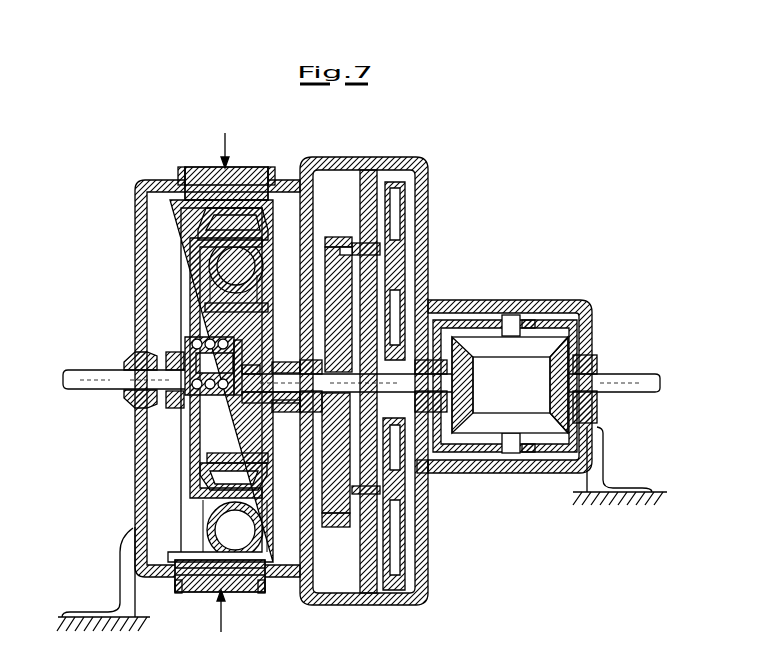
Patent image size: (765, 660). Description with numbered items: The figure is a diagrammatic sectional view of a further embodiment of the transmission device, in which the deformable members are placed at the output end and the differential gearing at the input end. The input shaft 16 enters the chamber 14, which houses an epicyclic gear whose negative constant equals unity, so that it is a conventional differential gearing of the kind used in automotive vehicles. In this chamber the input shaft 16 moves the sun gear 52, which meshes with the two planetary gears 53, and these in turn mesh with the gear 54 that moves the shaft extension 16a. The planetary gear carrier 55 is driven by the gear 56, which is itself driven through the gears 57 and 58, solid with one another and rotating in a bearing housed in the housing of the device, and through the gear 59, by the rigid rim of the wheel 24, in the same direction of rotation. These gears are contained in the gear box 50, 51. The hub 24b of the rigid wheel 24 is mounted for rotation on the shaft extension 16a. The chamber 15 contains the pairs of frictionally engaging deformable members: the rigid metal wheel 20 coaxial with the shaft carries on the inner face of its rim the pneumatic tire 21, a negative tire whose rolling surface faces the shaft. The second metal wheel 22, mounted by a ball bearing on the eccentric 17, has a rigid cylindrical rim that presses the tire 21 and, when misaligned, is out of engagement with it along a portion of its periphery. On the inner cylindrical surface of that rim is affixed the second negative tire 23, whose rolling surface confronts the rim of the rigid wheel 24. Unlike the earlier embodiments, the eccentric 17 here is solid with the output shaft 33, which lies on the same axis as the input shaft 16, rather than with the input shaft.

The chamber 14 is at (555, 318).
The chamber 15 is at (150, 500).
The input shaft 16 is at (619, 382).
The shaft extension 16a is at (253, 386).
The eccentric 17 is at (215, 373).
The wheel 20 is at (172, 232).
The pneumatic tire 21 is at (262, 512).
The second metal wheel 22 is at (198, 277).
The second negative tire 23 is at (261, 484).
The rigid wheel 24 is at (267, 322).
The hub 24b is at (285, 399).
The output shaft 33 is at (102, 378).
The gear box 50 is at (338, 584).
The gear box 51 is at (376, 594).
The sun gear 52 is at (560, 402).
The planetary gears 53 is at (520, 346).
The gear 54 is at (467, 388).
The planetary gear carrier 55 is at (481, 320).
The gear 56 is at (418, 468).
The gear 57 is at (408, 197).
The gear 58 is at (347, 237).
The gear 59 is at (330, 297).